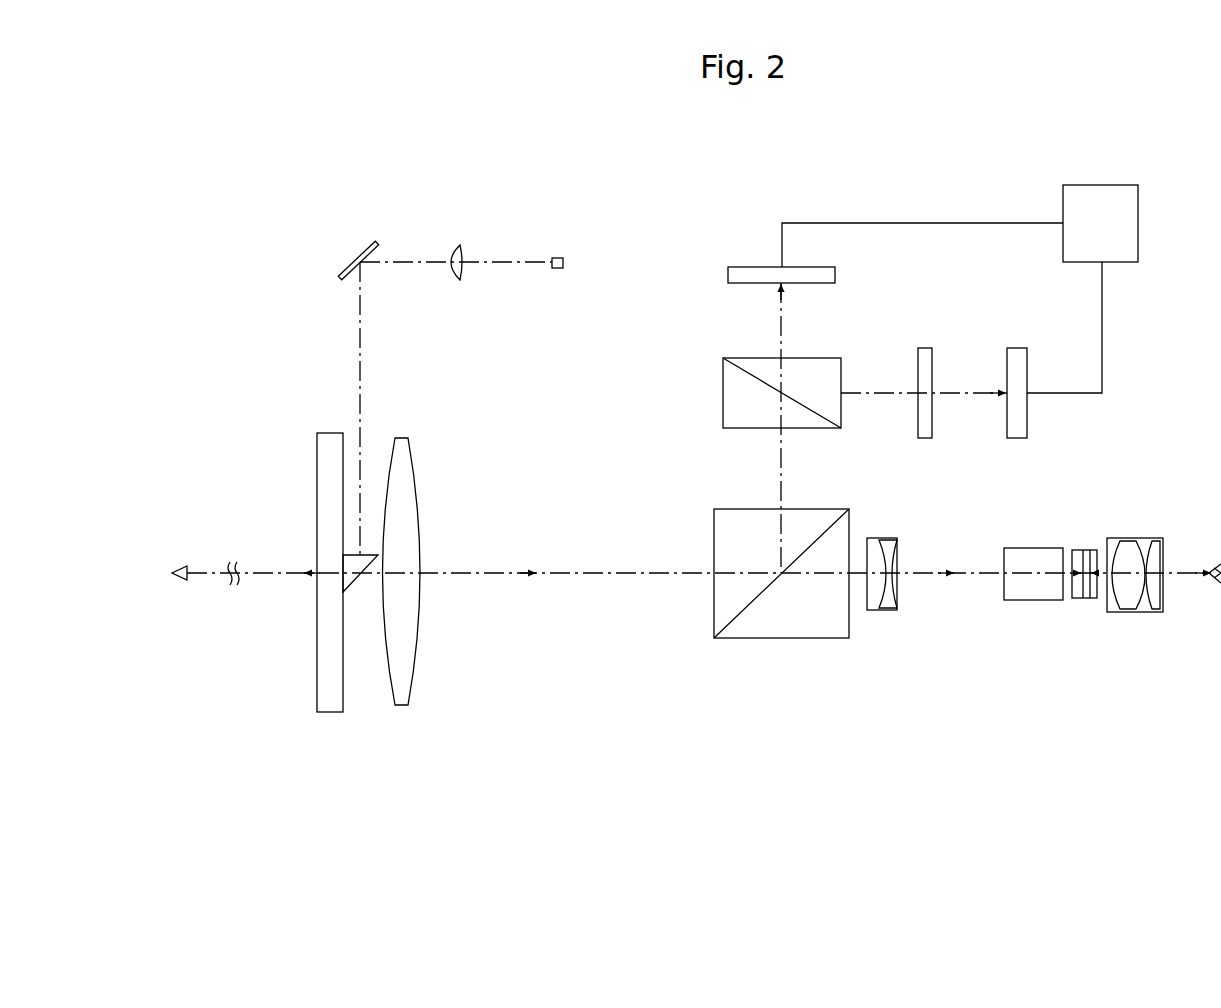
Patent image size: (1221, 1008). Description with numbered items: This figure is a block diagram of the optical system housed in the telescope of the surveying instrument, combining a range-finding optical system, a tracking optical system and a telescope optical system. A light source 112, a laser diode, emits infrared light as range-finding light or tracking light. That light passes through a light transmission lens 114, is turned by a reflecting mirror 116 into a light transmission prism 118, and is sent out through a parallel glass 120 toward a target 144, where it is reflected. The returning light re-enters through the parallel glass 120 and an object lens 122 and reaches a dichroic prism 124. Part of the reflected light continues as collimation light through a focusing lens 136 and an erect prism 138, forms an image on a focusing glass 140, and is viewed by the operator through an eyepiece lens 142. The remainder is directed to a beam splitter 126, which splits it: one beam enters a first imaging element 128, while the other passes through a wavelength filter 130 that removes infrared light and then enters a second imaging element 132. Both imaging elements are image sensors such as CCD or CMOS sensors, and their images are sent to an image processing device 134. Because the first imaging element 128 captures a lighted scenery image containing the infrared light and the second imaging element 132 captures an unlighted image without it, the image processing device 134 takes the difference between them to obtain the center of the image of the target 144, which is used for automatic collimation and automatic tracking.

The light source 112 is at (556, 258).
The light transmission lens 114 is at (451, 245).
The reflecting mirror 116 is at (360, 247).
The light transmission prism 118 is at (350, 585).
The parallel glass 120 is at (317, 451).
The object lens 122 is at (413, 668).
The dichroic prism 124 is at (727, 509).
The beam splitter 126 is at (737, 358).
The first imaging element 128 is at (737, 267).
The wavelength filter 130 is at (923, 348).
The second imaging element 132 is at (1015, 348).
The image processing device 134 is at (1112, 185).
The focusing lens 136 is at (885, 538).
The erect prism 138 is at (1045, 548).
The focusing glass 140 is at (1082, 598).
The eyepiece lens 142 is at (1128, 615).
The target 144 is at (179, 565).